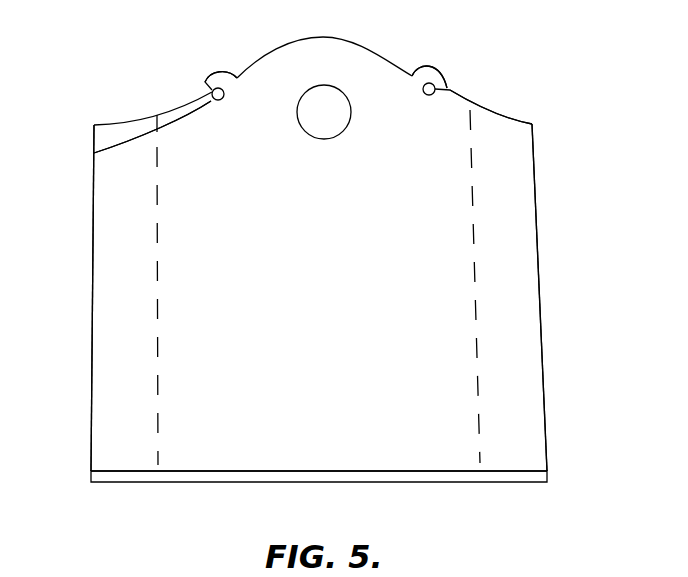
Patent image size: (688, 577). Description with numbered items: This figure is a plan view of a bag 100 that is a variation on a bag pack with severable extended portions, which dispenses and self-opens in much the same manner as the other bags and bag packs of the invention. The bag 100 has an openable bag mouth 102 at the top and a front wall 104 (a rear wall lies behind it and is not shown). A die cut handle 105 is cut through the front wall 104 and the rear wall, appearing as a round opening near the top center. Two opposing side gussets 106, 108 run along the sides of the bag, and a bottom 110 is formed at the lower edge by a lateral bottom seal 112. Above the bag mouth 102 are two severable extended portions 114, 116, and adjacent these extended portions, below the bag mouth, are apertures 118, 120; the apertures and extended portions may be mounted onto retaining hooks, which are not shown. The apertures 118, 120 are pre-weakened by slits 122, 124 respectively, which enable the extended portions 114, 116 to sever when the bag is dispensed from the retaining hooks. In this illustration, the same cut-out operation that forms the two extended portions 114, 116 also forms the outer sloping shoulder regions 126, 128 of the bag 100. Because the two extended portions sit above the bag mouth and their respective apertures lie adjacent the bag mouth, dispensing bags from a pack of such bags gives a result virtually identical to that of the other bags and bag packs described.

The bag 100 is at (541, 226).
The openable bag mouth 102 is at (390, 62).
The front wall 104 is at (336, 334).
The die cut handle 105 is at (305, 92).
The side gusset 106 is at (120, 263).
The side gusset 108 is at (510, 302).
The bottom 110 is at (268, 485).
The lateral bottom seal 112 is at (343, 472).
The severable extended portion 114 is at (205, 95).
The severable extended portion 116 is at (446, 82).
The aperture 118 is at (94, 153).
The aperture 120 is at (450, 89).
The slit 122 is at (206, 83).
The slit 124 is at (431, 69).
The outer sloping shoulder region 126 is at (214, 179).
The outer sloping shoulder region 128 is at (490, 180).